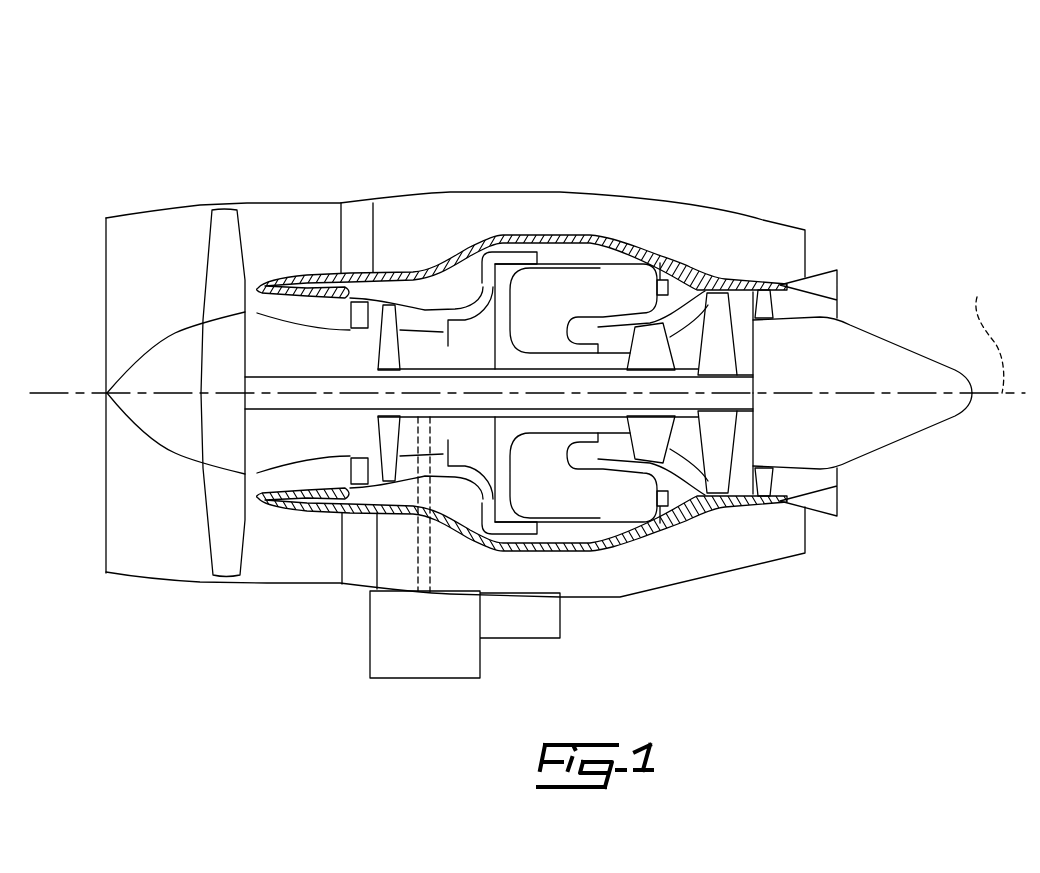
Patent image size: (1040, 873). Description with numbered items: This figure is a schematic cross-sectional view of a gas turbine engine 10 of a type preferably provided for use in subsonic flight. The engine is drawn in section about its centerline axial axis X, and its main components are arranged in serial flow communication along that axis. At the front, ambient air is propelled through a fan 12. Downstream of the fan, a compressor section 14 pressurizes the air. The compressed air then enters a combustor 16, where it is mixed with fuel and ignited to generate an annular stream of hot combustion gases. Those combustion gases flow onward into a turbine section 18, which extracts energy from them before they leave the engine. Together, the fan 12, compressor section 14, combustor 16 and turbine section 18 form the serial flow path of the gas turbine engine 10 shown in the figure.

The gas turbine engine 10 is at (527, 351).
The fan 12 is at (222, 512).
The compressor section 14 is at (415, 313).
The combustor 16 is at (583, 283).
The turbine section 18 is at (685, 442).